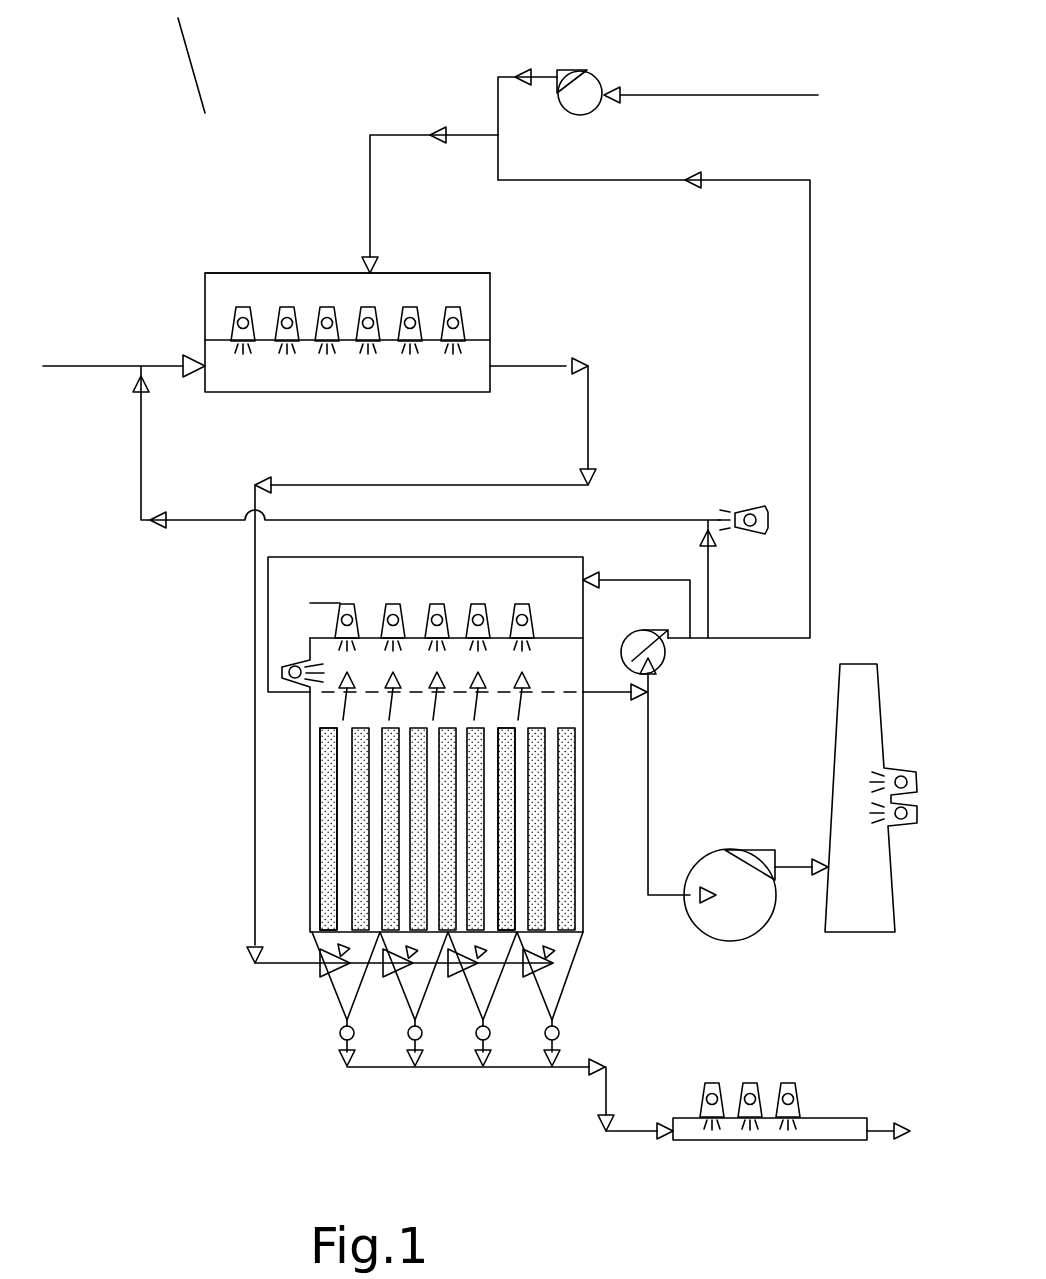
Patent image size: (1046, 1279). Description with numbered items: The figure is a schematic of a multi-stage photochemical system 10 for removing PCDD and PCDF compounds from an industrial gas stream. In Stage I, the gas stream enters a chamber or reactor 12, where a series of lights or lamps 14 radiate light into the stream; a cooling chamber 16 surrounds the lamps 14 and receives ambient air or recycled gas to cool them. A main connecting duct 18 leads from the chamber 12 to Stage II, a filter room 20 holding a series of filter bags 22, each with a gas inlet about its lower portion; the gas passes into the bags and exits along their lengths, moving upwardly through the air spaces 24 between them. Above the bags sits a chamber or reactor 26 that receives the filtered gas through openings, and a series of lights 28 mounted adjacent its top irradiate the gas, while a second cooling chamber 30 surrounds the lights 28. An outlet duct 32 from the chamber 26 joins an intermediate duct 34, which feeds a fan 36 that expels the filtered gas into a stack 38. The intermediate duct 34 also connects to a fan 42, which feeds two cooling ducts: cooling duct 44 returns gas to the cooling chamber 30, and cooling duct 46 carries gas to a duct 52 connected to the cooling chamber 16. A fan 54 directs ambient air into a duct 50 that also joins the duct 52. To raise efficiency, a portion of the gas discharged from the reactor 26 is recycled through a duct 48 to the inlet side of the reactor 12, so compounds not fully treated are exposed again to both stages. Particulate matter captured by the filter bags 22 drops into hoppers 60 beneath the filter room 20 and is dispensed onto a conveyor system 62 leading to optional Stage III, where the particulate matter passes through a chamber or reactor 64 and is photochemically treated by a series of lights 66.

The photochemical system 10 is at (205, 113).
The chamber or reactor 12 is at (428, 372).
The lights or lamps 14 is at (242, 308).
The cooling chamber 16 is at (422, 272).
The main connecting duct 18 is at (590, 400).
The filter room or filter chamber 20 is at (588, 893).
The filter bags 22 is at (322, 810).
The air spaces 24 is at (548, 790).
The chamber or reactor 26 is at (330, 680).
The lights or lamps 28 is at (335, 606).
The second cooling chamber 30 is at (295, 588).
The outlet duct 32 is at (606, 695).
The intermediate duct 34 is at (651, 737).
The fan 36 is at (743, 920).
The stack 38 is at (838, 694).
The fan 42 is at (660, 648).
The cooling duct 44 is at (645, 578).
The cooling duct 46 is at (810, 478).
The duct 48 is at (620, 520).
The duct 50 is at (538, 77).
The duct 52 is at (370, 170).
The fan 54 is at (590, 85).
The hoppers 60 is at (408, 998).
The conveyor system 62 is at (462, 1070).
The chamber or reactor 64 is at (820, 1130).
The lights 66 is at (795, 1085).